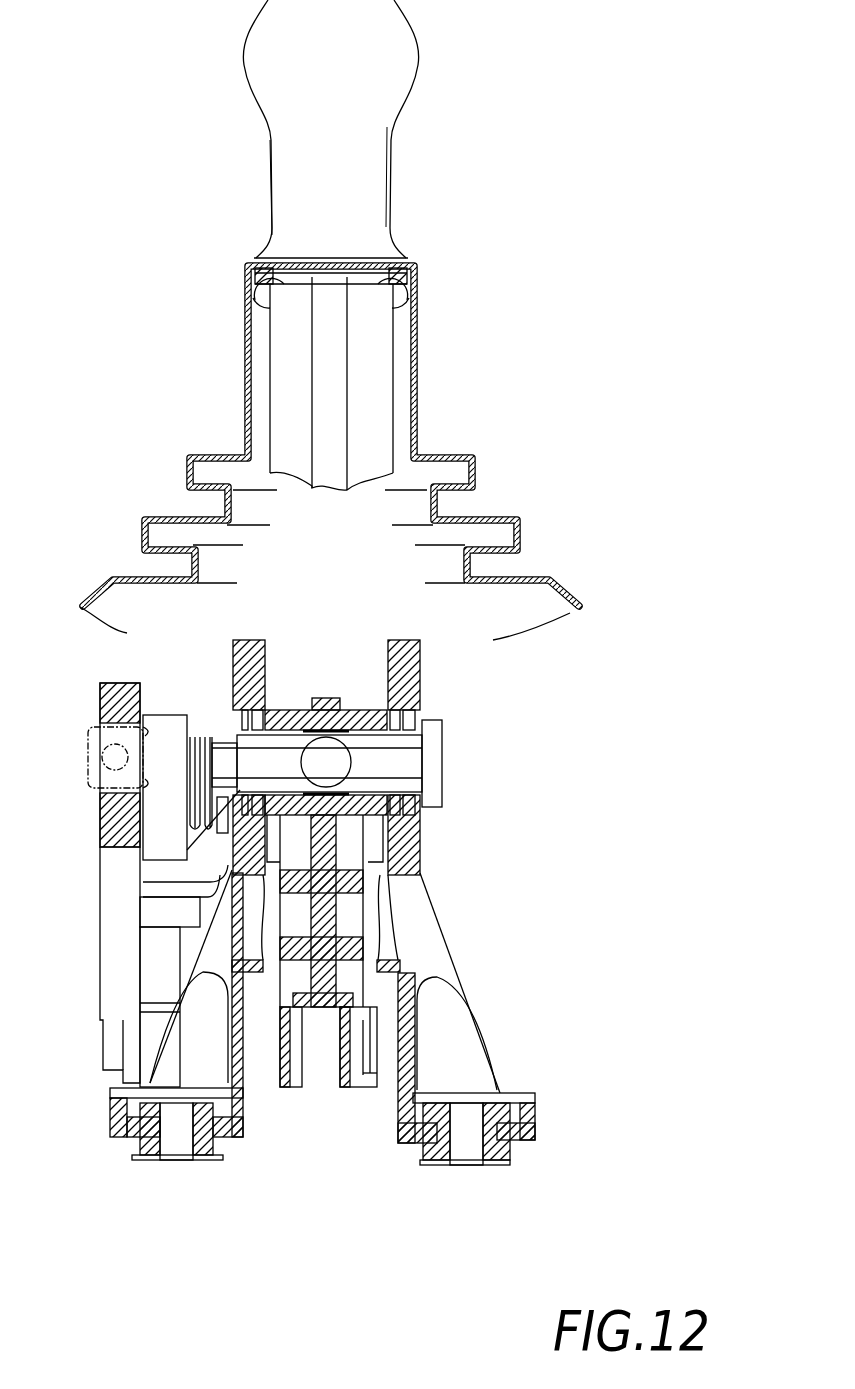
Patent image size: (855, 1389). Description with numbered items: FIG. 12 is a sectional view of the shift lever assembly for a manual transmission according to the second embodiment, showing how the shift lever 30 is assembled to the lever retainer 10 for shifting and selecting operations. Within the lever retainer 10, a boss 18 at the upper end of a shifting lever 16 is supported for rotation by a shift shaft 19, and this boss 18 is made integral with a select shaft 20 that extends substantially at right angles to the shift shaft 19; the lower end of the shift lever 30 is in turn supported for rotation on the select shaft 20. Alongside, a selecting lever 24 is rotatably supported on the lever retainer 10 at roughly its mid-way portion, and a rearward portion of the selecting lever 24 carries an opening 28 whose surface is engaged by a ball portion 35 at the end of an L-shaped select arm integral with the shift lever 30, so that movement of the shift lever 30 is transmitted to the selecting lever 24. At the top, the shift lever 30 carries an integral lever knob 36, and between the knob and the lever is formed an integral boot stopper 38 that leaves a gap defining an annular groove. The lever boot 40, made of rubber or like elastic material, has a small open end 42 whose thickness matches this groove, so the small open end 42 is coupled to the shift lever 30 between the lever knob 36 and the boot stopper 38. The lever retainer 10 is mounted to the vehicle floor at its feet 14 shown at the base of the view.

The lever retainer 10 is at (416, 852).
The mounting feet 14 is at (222, 1153).
The shifting lever 16 is at (330, 912).
The boss 18 is at (355, 723).
The shift shaft 19 is at (410, 759).
The select shaft 20 is at (303, 752).
The selecting lever 24 is at (113, 920).
The opening 28 is at (112, 818).
The shift lever 30 is at (372, 383).
The ball portion 35 is at (90, 730).
The lever knob 36 is at (371, 146).
The boot stopper 38 is at (405, 303).
The lever boot 40 is at (516, 521).
The small open end 42 is at (258, 303).